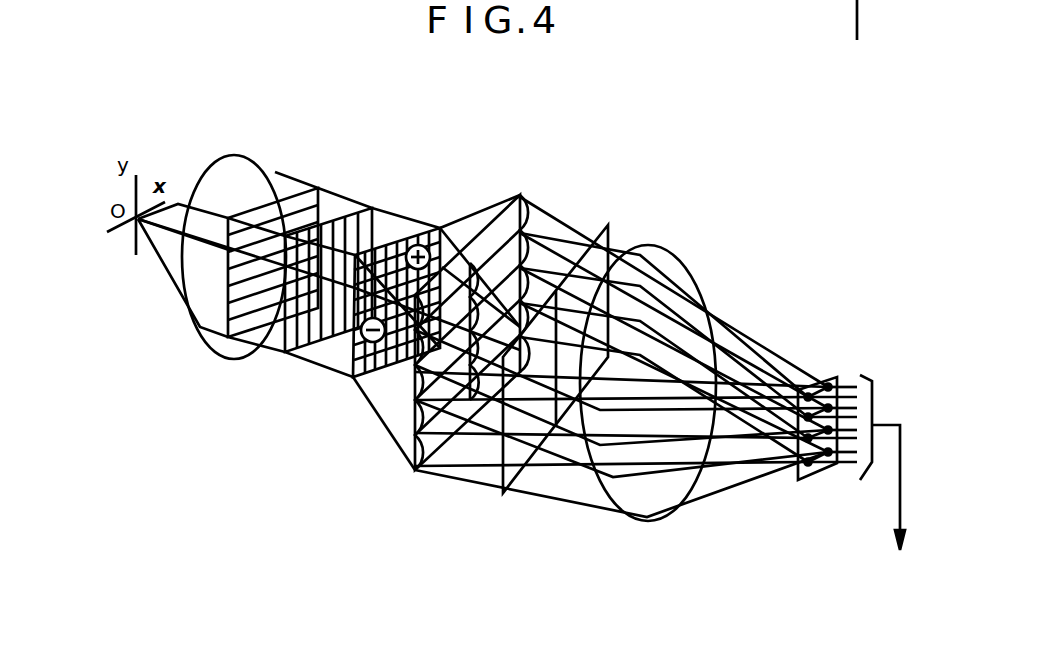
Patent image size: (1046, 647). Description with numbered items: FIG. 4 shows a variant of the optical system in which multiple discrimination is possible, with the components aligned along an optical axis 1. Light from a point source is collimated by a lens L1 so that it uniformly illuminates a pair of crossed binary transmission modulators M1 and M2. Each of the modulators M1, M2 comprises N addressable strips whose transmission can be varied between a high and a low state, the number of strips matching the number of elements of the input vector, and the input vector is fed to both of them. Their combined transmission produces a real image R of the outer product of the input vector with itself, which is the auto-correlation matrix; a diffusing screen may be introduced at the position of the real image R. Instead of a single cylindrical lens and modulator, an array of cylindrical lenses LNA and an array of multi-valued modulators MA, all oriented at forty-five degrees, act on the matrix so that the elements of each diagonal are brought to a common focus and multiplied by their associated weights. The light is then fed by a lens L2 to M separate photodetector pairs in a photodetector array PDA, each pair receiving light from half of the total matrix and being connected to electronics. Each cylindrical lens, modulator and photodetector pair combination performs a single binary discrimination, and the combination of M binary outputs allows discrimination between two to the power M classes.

The optical axis 1 is at (203, 245).
The lens L1 is at (240, 156).
The binary transmission modulator M1 is at (288, 198).
The binary transmission modulator M2 is at (372, 209).
The real image R is at (353, 379).
The array of cylindrical lenses LNA is at (520, 193).
The array of multi-valued modulators MA is at (608, 240).
The lens L2 is at (655, 248).
The photodetector array PDA is at (830, 377).